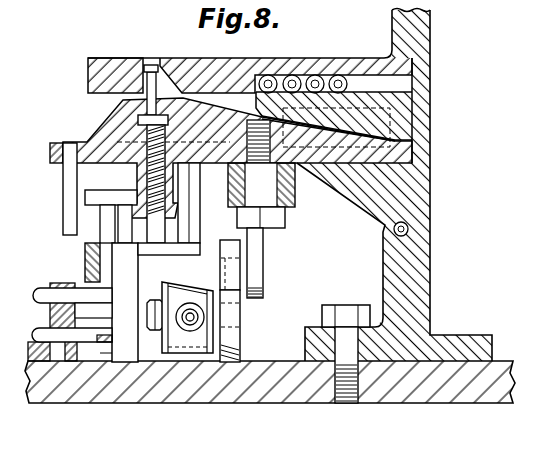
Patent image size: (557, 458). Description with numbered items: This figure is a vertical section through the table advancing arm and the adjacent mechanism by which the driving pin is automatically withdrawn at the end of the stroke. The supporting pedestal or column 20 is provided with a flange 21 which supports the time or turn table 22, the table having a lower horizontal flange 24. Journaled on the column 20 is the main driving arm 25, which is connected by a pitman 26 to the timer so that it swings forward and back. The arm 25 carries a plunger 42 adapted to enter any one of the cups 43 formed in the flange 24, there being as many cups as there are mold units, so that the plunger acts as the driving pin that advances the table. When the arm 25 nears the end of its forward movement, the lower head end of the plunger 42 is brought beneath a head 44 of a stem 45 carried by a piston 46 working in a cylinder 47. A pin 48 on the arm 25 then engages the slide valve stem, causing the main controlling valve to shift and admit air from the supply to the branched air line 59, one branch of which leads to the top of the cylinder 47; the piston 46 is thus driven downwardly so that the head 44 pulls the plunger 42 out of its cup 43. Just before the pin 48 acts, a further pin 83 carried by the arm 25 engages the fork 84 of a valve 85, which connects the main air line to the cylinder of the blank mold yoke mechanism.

The supporting pedestal or column 20 is at (431, 272).
The flange 21 is at (397, 104).
The time or turn table 22 is at (392, 33).
The lower horizontal flange 24 is at (87, 70).
The main driving arm 25 is at (53, 143).
The pitman 26 is at (295, 208).
The plunger 42 is at (147, 102).
The cups 43 is at (151, 64).
The head 44 is at (107, 186).
The stem 45 is at (107, 258).
The piston 46 is at (97, 343).
The cylinder 47 is at (105, 353).
The pin 48 is at (63, 214).
The air line 59 is at (47, 290).
The pin 83 is at (240, 273).
The fork 84 is at (241, 315).
The valve 85 is at (197, 279).